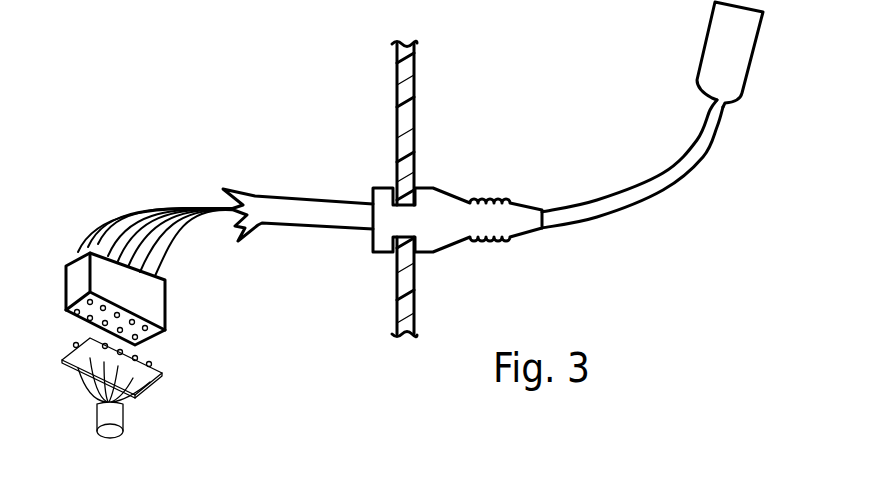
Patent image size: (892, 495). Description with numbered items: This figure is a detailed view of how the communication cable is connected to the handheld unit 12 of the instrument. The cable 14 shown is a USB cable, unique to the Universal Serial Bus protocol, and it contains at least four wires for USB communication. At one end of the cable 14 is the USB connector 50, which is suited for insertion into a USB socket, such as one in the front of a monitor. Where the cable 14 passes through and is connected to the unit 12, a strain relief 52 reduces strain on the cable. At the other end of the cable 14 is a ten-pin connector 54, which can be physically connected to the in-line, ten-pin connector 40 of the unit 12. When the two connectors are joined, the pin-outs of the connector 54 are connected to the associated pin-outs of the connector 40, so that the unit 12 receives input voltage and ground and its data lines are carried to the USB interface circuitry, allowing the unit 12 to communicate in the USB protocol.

The handheld unit 12 is at (413, 112).
The cable 14 is at (665, 192).
The connector 40 is at (62, 360).
The USB connector 50 is at (727, 30).
The strain relief 52 is at (446, 200).
The ten-pin connector 54 is at (67, 266).